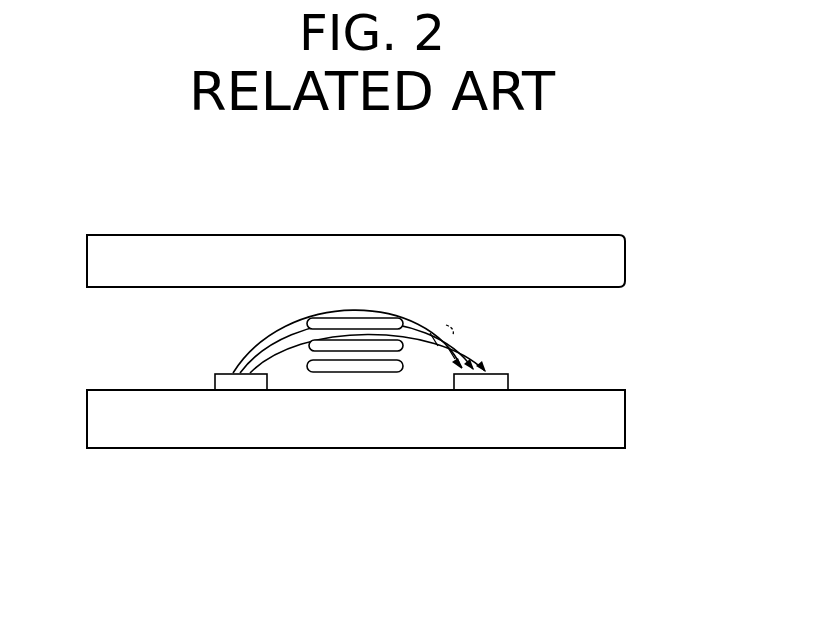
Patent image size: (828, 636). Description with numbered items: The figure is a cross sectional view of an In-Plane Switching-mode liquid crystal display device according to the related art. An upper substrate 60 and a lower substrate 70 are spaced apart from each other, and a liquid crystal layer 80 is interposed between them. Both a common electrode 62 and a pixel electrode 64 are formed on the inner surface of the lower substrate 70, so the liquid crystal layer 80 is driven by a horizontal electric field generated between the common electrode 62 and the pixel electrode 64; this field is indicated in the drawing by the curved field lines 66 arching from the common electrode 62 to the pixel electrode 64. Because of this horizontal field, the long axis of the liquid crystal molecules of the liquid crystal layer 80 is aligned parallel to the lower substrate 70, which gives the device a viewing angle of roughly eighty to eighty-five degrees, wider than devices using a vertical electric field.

The upper substrate 60 is at (626, 237).
The lower substrate 70 is at (626, 392).
The liquid crystal layer 80 is at (626, 289).
The common electrode 62 is at (232, 380).
The pixel electrode 64 is at (481, 382).
The conductive particles / connection path 66 is at (428, 362).